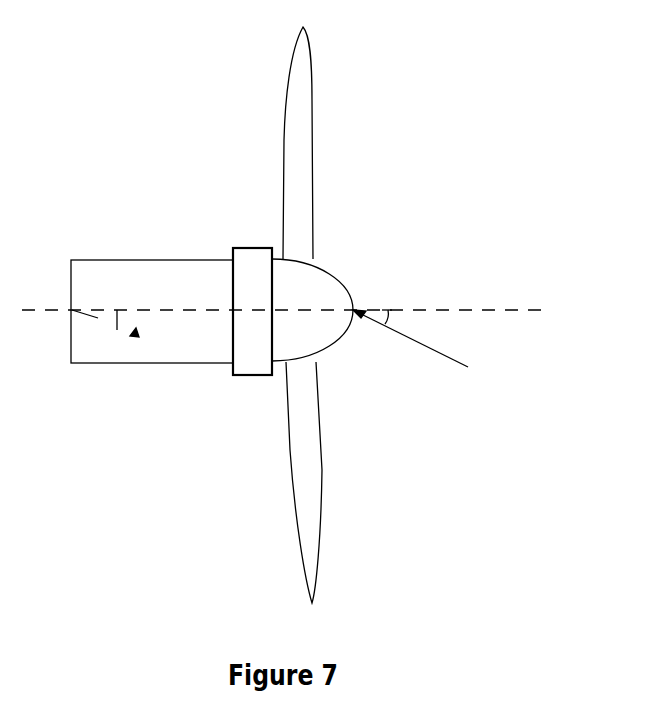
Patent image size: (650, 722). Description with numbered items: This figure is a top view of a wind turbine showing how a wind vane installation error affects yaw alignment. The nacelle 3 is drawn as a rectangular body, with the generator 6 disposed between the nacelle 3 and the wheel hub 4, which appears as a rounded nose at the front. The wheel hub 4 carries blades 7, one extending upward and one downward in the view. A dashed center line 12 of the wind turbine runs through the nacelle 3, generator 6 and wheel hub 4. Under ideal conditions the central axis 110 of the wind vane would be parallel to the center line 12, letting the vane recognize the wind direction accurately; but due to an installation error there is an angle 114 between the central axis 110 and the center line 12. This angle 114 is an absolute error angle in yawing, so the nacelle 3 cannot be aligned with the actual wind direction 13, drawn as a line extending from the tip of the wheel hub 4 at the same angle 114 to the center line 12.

The nacelle 3 is at (178, 365).
The wheel hub 4 is at (340, 270).
The generator 6 is at (255, 247).
The blade 7 is at (316, 150).
The center line 12 is at (420, 310).
The actual wind direction 13 is at (430, 352).
The central axis 110 is at (98, 322).
The angle 114 is at (395, 318).